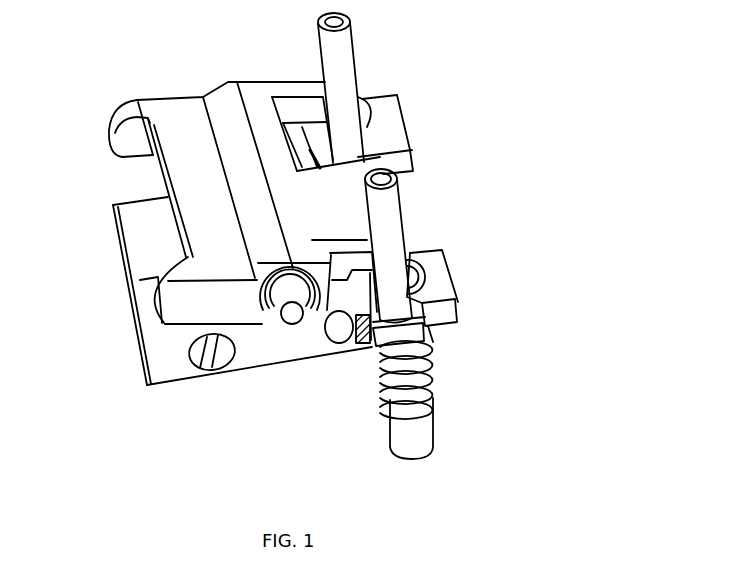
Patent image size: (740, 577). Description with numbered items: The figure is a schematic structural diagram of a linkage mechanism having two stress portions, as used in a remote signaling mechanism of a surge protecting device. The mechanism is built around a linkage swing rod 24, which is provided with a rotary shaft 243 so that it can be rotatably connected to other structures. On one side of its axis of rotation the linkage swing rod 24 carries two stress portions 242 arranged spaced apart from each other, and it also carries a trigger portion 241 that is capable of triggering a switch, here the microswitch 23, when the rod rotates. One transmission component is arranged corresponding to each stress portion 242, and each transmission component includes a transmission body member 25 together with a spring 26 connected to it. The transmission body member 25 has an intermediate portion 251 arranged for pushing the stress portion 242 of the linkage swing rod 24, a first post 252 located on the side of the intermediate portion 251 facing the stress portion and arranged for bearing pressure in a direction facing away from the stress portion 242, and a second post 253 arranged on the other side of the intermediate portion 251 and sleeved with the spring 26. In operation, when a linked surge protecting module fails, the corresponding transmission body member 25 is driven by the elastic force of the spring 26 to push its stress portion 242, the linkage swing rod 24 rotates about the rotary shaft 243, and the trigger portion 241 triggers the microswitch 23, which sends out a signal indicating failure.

The microswitch 23 is at (155, 248).
The linkage swing rod 24 is at (194, 128).
The trigger portion 241 is at (170, 217).
The stress portion 242 is at (290, 98).
The rotary shaft 243 is at (283, 318).
The transmission body member 25 is at (340, 70).
The intermediate portion 251 is at (438, 293).
The first post 252 is at (392, 238).
The second post 253 is at (415, 428).
The spring 26 is at (428, 388).